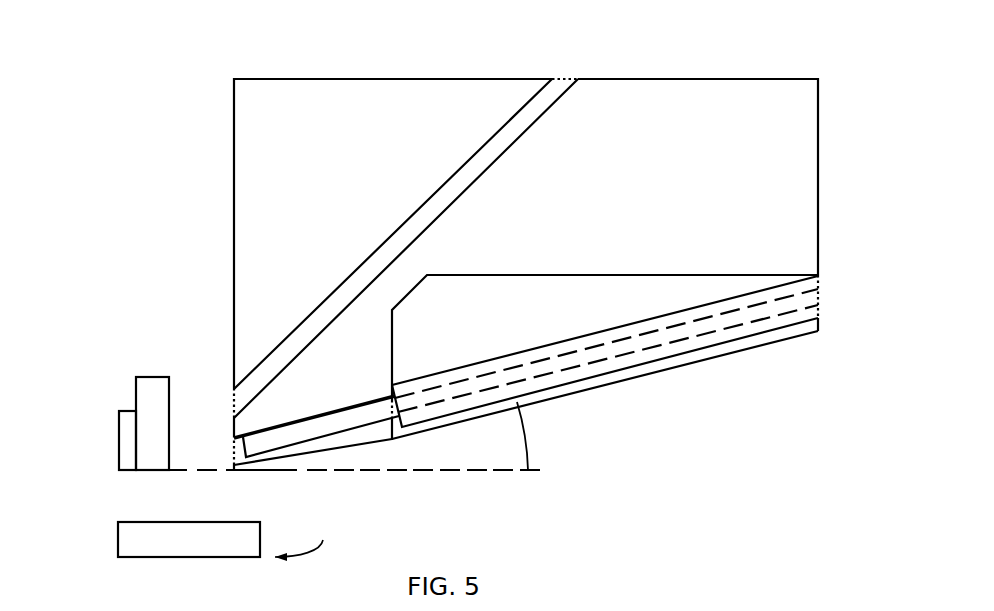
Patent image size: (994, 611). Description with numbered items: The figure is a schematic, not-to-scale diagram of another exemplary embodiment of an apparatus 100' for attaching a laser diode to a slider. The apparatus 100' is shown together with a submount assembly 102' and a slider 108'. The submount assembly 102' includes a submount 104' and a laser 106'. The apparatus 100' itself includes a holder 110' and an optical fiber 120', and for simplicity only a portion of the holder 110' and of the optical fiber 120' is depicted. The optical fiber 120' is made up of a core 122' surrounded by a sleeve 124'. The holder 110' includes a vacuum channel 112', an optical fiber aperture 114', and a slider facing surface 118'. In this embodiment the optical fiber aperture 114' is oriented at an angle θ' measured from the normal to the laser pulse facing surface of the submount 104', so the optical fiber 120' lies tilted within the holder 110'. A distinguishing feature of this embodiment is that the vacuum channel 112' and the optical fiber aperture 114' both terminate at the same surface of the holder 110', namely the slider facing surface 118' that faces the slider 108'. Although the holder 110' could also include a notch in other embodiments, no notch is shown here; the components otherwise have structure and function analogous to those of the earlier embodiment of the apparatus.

The apparatus 100' is at (460, 298).
The submount assembly 102' is at (107, 400).
The submount 104' is at (120, 484).
The laser 106' is at (99, 437).
The slider 108' is at (161, 544).
The holder 110' is at (555, 274).
The vacuum channel 112' is at (443, 224).
The optical fiber aperture 114' is at (291, 456).
The slider facing surface 118' is at (336, 491).
The optical fiber 120' is at (526, 398).
The core 122' is at (847, 315).
The sleeve 124' is at (605, 351).